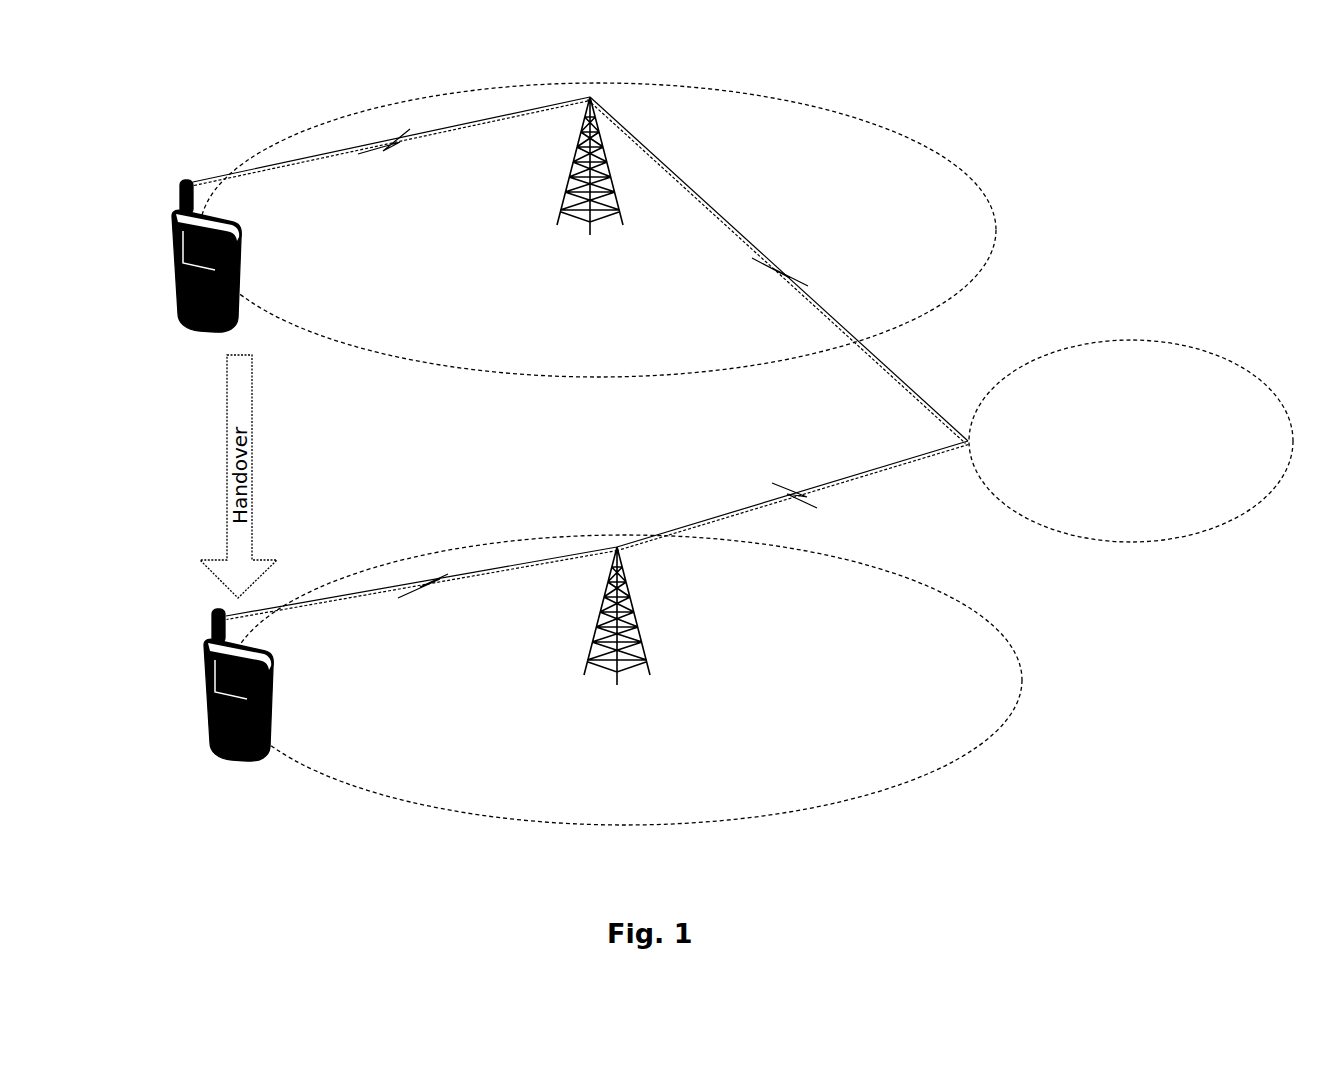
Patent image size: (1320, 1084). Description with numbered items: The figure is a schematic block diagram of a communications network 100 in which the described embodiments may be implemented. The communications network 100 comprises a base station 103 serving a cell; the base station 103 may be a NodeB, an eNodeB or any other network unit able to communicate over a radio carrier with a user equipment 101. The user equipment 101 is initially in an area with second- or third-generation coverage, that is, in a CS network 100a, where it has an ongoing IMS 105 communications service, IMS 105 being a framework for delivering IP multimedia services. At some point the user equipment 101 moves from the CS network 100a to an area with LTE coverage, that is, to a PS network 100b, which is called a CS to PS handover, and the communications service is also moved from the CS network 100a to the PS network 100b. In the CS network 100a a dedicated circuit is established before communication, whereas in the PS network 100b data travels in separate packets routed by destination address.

The communications network 100 is at (1196, 191).
The CS network 100a is at (922, 165).
The PS network 100b is at (948, 742).
The user equipment 101 is at (170, 243).
The base station 103 is at (612, 218).
The IMS 105 is at (1175, 528).